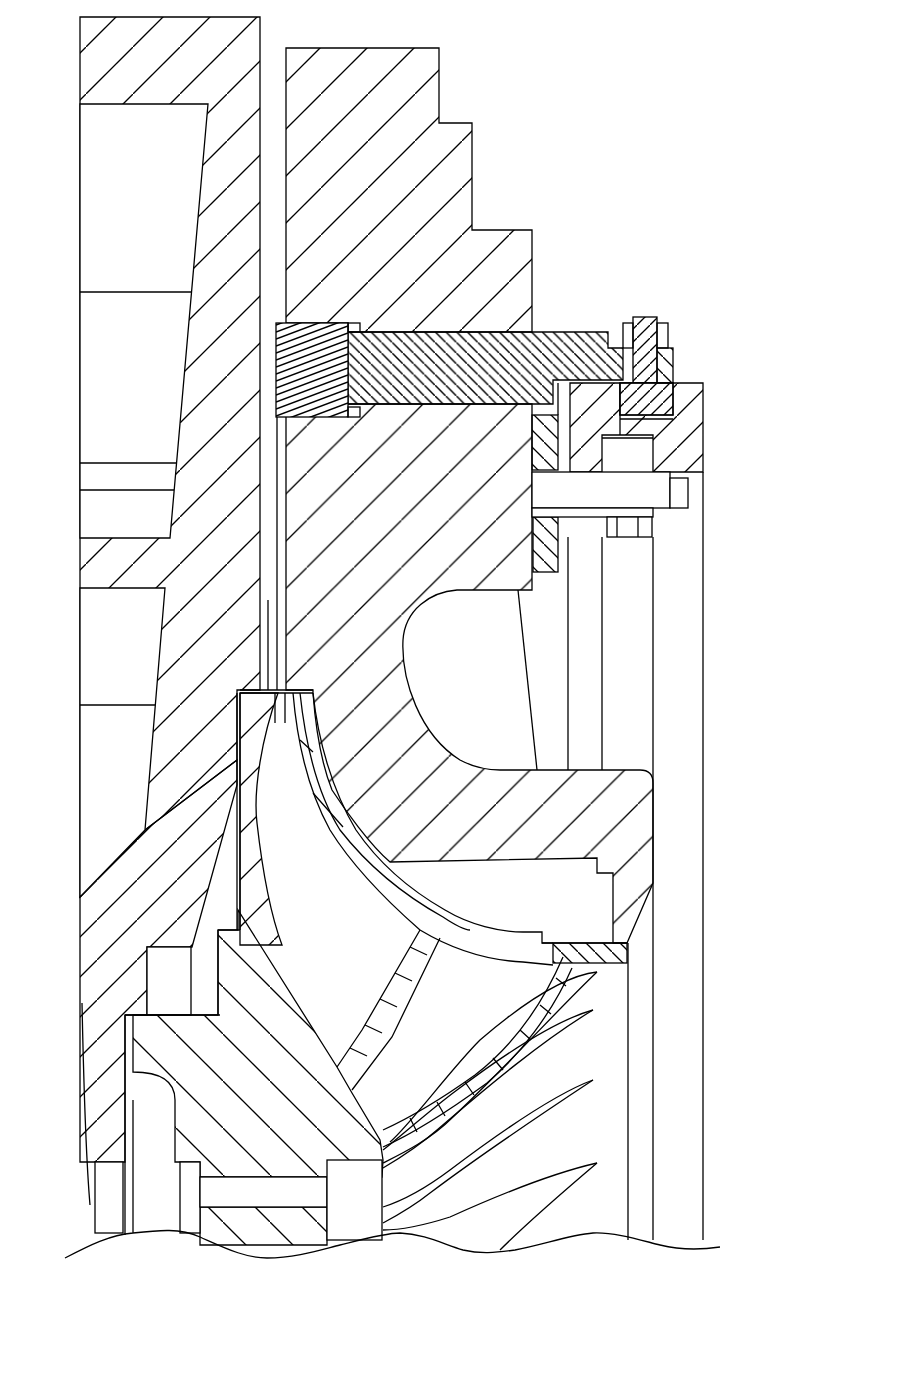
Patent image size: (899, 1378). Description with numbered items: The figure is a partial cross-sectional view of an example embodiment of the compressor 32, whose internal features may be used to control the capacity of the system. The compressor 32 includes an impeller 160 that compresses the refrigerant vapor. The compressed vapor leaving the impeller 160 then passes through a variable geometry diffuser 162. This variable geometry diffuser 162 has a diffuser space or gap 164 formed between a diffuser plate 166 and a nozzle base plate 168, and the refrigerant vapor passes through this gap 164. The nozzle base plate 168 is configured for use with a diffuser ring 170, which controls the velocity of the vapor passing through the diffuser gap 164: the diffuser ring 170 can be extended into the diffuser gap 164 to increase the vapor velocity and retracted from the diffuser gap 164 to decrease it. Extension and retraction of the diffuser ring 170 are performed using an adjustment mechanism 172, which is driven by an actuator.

The compressor 32 is at (688, 150).
The impeller 160 is at (483, 1008).
The variable geometry diffuser 162 is at (178, 407).
The diffuser space or gap 164 is at (267, 402).
The diffuser plate 166 is at (105, 47).
The nozzle base plate 168 is at (460, 162).
The diffuser ring 170 is at (290, 365).
The adjustment mechanism 172 is at (696, 370).